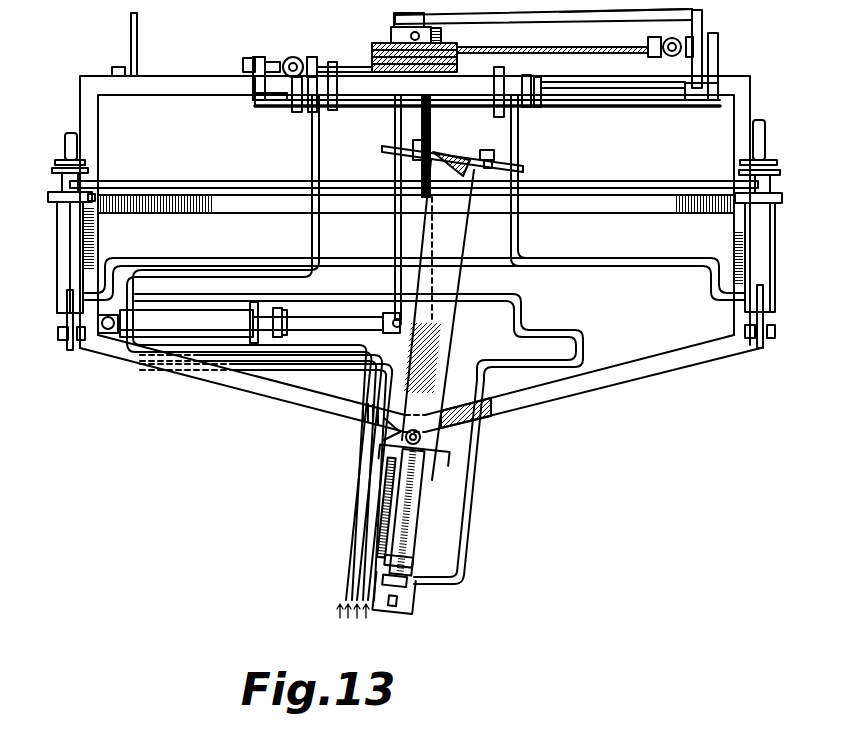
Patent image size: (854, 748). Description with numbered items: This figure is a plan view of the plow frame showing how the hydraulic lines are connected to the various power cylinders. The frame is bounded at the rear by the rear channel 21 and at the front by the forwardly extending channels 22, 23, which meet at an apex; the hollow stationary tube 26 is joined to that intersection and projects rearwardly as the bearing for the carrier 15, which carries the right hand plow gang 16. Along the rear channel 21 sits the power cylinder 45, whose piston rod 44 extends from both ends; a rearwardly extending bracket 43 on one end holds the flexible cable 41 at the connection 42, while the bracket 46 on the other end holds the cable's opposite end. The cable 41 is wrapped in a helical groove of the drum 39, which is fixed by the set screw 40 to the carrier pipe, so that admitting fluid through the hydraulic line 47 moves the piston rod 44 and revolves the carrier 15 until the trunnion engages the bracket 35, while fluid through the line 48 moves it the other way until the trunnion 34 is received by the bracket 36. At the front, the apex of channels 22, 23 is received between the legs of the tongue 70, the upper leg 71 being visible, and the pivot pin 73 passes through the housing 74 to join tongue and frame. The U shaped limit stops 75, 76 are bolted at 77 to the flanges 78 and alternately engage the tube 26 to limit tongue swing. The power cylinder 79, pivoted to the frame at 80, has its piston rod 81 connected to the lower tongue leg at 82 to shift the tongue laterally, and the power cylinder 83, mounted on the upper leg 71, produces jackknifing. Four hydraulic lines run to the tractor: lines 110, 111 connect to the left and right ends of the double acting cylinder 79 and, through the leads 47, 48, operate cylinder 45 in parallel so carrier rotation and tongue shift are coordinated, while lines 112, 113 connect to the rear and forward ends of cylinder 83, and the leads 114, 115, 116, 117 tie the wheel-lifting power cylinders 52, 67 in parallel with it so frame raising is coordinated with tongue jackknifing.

The carrier 15 is at (592, 20).
The right hand plow gang 16 is at (395, 14).
The rear channel 21 is at (228, 78).
The forwardly extending channel 22 is at (300, 397).
The forwardly extending channel 23 is at (640, 372).
The hollow stationary tube 26 is at (395, 232).
The trunnion 34 is at (705, 20).
The bracket 35 is at (692, 58).
The bracket 36 is at (130, 32).
The drum 39 is at (431, 42).
The set screw 40 is at (383, 38).
The flexible cable 41 is at (553, 53).
The cable end connection 42 is at (650, 38).
The rearwardly extending bracket 43 is at (720, 60).
The piston rod 44 is at (665, 92).
The power cylinder 45 is at (388, 104).
The bracket 46 is at (262, 103).
The hydraulic line 47 is at (290, 57).
The hydraulic line 48 is at (518, 138).
The power cylinder 52 is at (778, 262).
The power cylinder 67 is at (62, 256).
The tongue 70 is at (430, 497).
The upper leg 71 is at (445, 363).
The pivot pin 73 is at (428, 440).
The housing 74 is at (395, 428).
The U shaped limit stop 75 is at (525, 170).
The U shaped limit stop 76 is at (382, 150).
The bolts 77 is at (430, 146).
The flanges 78 is at (482, 157).
The power cylinder 79 is at (208, 318).
The pivotal connection 80 is at (108, 330).
The piston rod 81 is at (353, 320).
The pivotal connection 82 is at (392, 313).
The power cylinder 83 is at (420, 546).
The hydraulic line 110 is at (346, 528).
The hydraulic line 111 is at (350, 573).
The hydraulic line 112 is at (356, 594).
The hydraulic line 113 is at (374, 617).
The hydraulic lead 114 is at (540, 303).
The hydraulic lead 115 is at (576, 325).
The hydraulic lead 116 is at (688, 258).
The hydraulic lead 117 is at (681, 182).